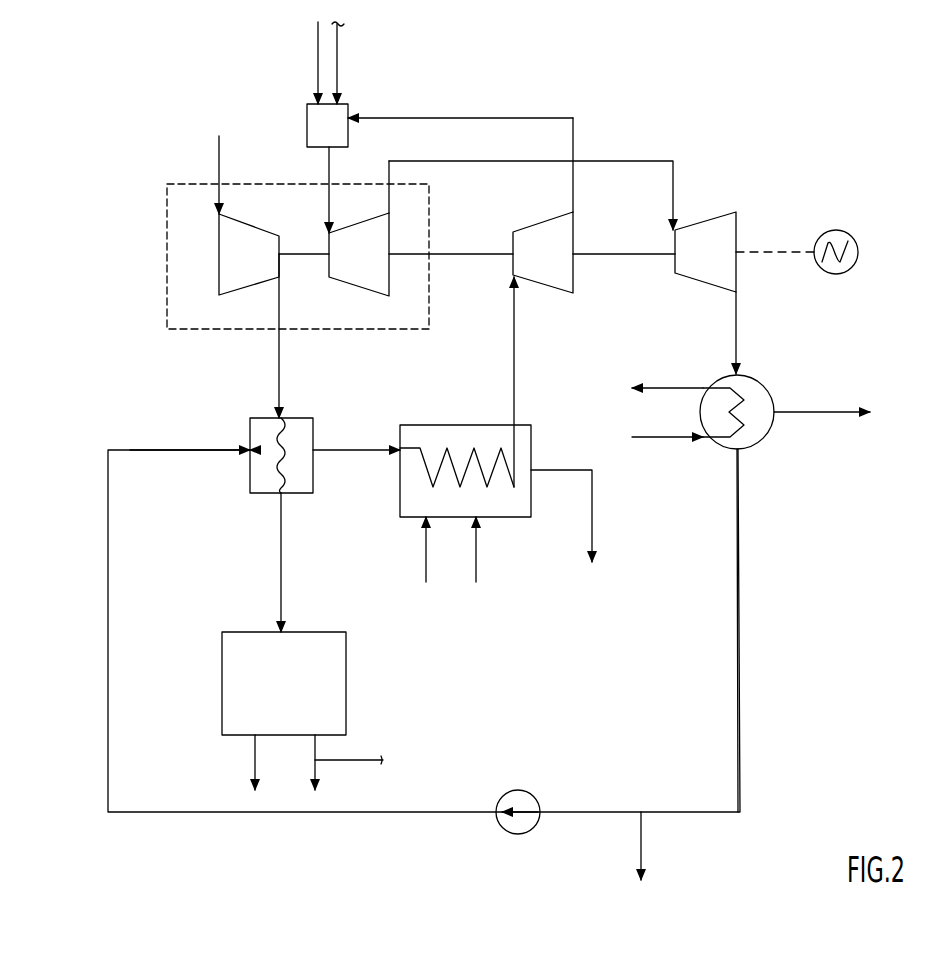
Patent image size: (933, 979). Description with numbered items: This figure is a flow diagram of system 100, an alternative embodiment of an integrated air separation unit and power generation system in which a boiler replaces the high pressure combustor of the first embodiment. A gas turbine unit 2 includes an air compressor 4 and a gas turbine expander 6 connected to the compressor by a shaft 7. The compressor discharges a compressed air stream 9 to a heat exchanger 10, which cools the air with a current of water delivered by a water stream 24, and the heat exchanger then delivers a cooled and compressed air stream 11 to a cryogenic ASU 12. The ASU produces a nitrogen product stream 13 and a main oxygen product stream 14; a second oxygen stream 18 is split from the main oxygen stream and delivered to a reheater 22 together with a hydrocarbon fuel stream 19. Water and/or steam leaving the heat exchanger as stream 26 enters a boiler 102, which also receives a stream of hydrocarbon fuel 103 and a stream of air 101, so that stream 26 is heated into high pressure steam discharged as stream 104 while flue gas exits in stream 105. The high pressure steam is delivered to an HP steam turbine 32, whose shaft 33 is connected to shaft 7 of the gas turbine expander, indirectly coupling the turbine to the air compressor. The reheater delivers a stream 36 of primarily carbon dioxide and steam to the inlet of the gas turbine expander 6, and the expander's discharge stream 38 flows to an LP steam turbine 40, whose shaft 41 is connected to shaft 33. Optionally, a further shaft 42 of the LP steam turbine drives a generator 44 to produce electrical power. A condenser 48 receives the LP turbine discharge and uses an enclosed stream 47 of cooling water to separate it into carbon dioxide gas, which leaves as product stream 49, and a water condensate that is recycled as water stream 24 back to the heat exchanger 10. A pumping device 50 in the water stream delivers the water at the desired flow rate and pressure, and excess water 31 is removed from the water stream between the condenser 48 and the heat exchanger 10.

The system 100 is at (807, 125).
The gas turbine unit 2 is at (174, 215).
The air compressor 4 is at (232, 248).
The gas turbine expander 6 is at (376, 278).
The shaft 7 is at (303, 256).
The compressed air stream 9 is at (280, 373).
The heat exchanger 10 is at (256, 491).
The cooled and compressed air stream 11 is at (282, 549).
The cryogenic ASU 12 is at (230, 692).
The nitrogen product stream 13 is at (254, 752).
The main oxygen product stream 14 is at (314, 745).
The second oxygen stream 18 is at (337, 42).
The hydrocarbon fuel stream 19 is at (318, 42).
The reheater 22 is at (340, 115).
The water stream 24 is at (108, 604).
The stream including water and/or steam 26 is at (340, 448).
The excess water 31 is at (640, 826).
The HP steam turbine 32 is at (525, 234).
The shaft 33 is at (460, 256).
The stream 36 is at (329, 166).
The discharge stream 38 is at (652, 160).
The LP steam turbine 40 is at (712, 230).
The shaft 41 is at (618, 256).
The further shaft 42 is at (783, 254).
The generator 44 is at (836, 230).
The enclosed stream of cooling water 47 is at (696, 388).
The condenser 48 is at (757, 446).
The carbon dioxide stream 49 is at (817, 413).
The pumping device 50 is at (530, 833).
The stream of air 101 is at (477, 565).
The boiler 102 is at (526, 437).
The stream of hydrocarbon fuel 103 is at (425, 564).
The high pressure steam stream 104 is at (514, 346).
The flue gas stream 105 is at (592, 520).